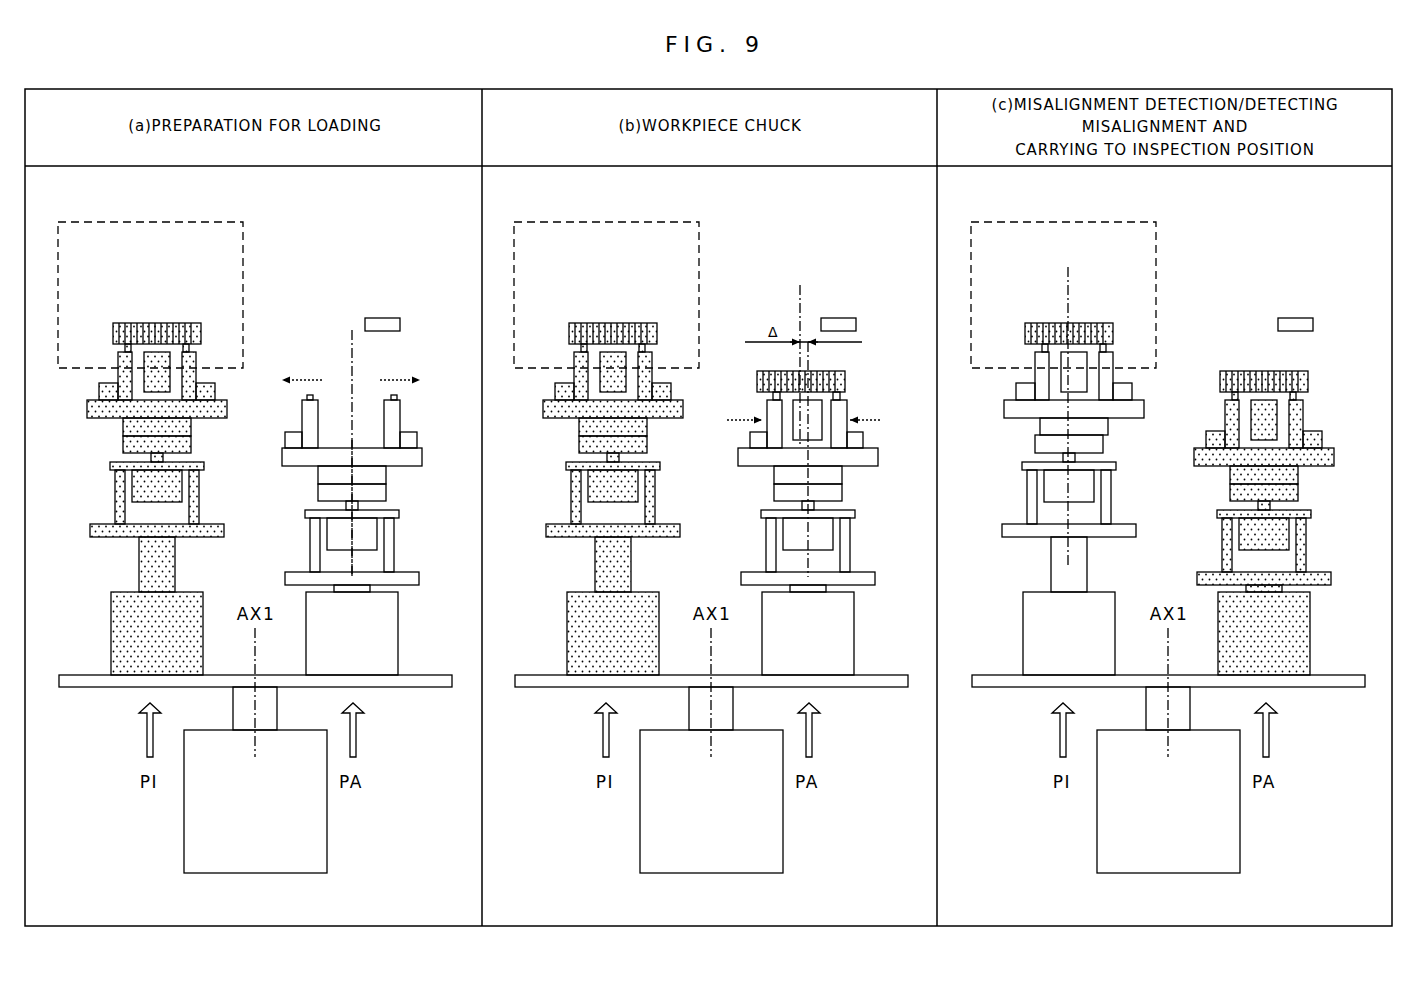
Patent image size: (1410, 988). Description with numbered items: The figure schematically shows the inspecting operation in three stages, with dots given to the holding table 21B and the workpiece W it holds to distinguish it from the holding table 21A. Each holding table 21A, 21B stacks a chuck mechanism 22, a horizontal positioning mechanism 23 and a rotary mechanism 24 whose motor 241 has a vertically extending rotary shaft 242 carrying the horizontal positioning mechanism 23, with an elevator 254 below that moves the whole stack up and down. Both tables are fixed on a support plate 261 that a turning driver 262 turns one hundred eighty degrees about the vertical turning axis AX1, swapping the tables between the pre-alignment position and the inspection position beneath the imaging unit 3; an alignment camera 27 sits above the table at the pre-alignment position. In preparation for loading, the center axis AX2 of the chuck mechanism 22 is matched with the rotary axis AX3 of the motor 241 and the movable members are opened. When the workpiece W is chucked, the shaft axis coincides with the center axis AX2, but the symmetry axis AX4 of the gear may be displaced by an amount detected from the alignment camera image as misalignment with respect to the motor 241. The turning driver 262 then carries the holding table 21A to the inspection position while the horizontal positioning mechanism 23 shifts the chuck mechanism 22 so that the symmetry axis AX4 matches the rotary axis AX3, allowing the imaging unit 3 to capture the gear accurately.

The imaging unit 3 is at (635, 290).
The workpiece W is at (710, 325).
The holding table 21A is at (1132, 355).
The holding table 21B is at (220, 355).
The chuck mechanism 22 is at (754, 403).
The horizontal positioning mechanism 23 is at (708, 459).
The rotary mechanism 24 is at (714, 523).
The motor 241 is at (712, 510).
The rotary shaft 242 is at (1076, 458).
The elevator 254 is at (718, 606).
The support plate 261 is at (726, 704).
The turning driver 262 is at (752, 780).
The alignment camera 27 is at (850, 308).
The turning axis AX1 is at (713, 680).
The center axis of the chuck mechanism AX2 is at (347, 358).
The rotary axis of the motor AX3 is at (350, 560).
The symmetry axis of the gear AX4 is at (936, 404).